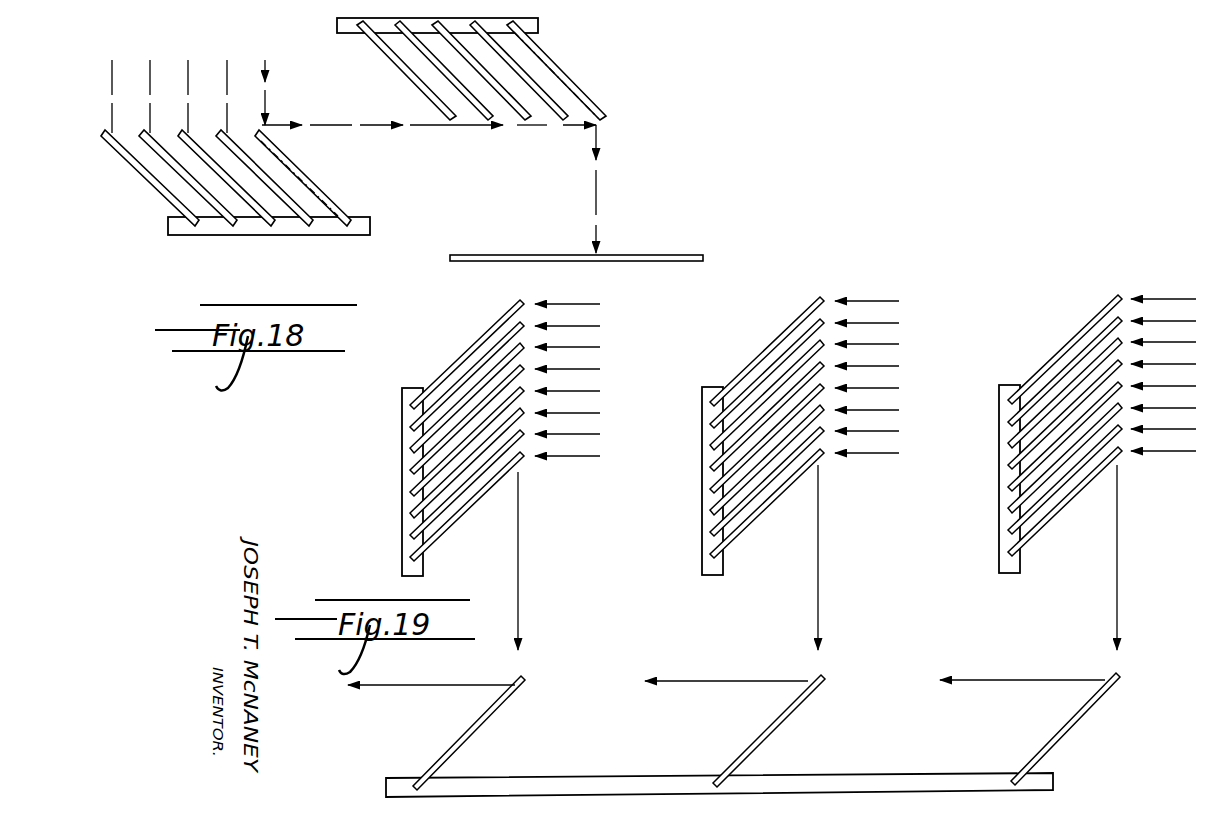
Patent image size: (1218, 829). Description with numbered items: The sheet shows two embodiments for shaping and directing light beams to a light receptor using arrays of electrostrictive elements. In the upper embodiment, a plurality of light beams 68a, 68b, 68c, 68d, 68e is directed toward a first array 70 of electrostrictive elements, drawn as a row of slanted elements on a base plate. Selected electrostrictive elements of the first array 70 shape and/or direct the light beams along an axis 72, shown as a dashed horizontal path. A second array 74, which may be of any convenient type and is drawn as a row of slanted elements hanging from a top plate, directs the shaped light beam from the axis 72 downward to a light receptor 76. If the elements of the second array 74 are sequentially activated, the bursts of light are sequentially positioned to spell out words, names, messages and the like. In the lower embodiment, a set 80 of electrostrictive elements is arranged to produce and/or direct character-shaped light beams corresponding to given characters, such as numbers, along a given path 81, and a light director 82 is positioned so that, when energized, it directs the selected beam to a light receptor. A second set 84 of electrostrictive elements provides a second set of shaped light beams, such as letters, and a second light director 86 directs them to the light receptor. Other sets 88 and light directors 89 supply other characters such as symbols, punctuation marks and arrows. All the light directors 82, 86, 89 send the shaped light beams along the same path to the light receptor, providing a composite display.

In FIG. 18, the light beam 68a is at (118, 58).
In FIG. 18, the light beam 68b is at (150, 62).
In FIG. 18, the light beam 68c is at (194, 59).
In FIG. 18, the light beam 68d is at (227, 57).
In FIG. 18, the light beam 68e is at (265, 67).
In FIG. 18, the first array 70 is at (147, 185).
In FIG. 18, the axis 72 is at (340, 125).
In FIG. 18, the second array 74 is at (395, 74).
In FIG. 18, the light receptor 76 is at (518, 255).
In FIG. 19, the set of electrostrictive elements 80 is at (401, 445).
In FIG. 19, the given path 81 is at (518, 553).
In FIG. 19, the light director 82 is at (470, 728).
In FIG. 19, the second set of electrostrictive elements 84 is at (701, 445).
In FIG. 19, the second light director 86 is at (765, 728).
In FIG. 19, the other sets 88 is at (998, 445).
In FIG. 19, the light directors 89 is at (1065, 723).